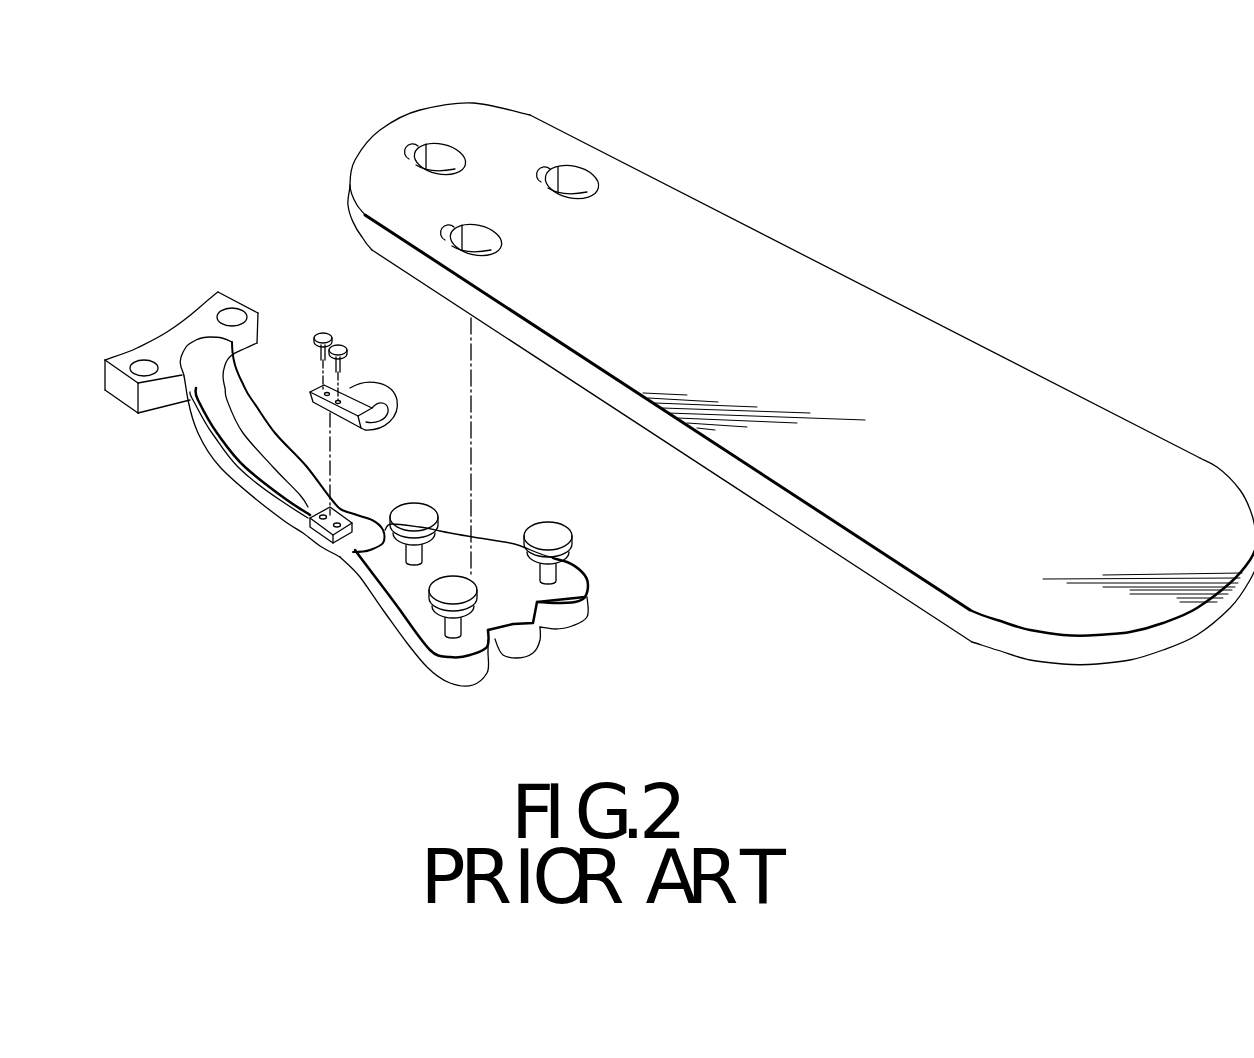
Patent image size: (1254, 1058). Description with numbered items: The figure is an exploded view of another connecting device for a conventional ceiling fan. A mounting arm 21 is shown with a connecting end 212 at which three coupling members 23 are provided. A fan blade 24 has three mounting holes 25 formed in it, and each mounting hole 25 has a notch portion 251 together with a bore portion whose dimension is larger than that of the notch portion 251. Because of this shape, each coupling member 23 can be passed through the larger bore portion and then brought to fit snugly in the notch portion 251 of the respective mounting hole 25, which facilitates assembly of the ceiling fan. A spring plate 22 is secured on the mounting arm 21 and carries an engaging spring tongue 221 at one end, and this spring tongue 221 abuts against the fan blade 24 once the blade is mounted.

The mounting arm 21 is at (243, 490).
The spring plate 22 is at (364, 370).
The engaging spring tongue 221 is at (380, 398).
The coupling members 23 is at (440, 589).
The fan blade 24 is at (801, 349).
The mounting holes 25 is at (597, 173).
The notch portion 251 is at (546, 165).
The connecting end 212 is at (513, 622).